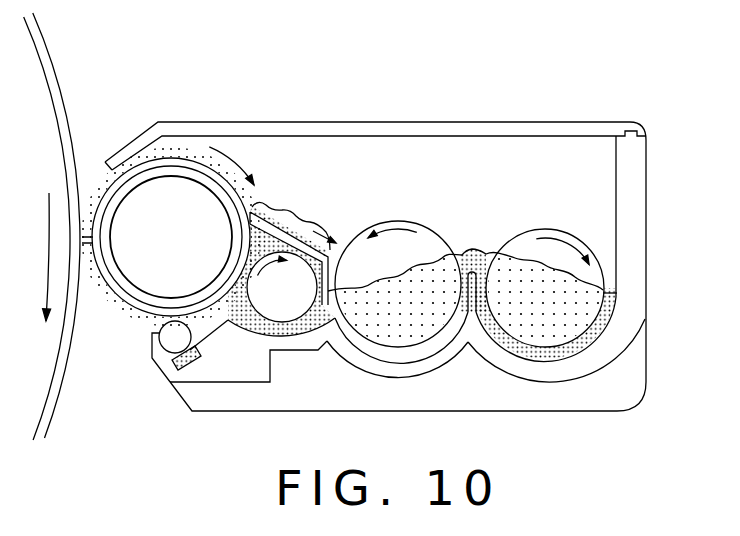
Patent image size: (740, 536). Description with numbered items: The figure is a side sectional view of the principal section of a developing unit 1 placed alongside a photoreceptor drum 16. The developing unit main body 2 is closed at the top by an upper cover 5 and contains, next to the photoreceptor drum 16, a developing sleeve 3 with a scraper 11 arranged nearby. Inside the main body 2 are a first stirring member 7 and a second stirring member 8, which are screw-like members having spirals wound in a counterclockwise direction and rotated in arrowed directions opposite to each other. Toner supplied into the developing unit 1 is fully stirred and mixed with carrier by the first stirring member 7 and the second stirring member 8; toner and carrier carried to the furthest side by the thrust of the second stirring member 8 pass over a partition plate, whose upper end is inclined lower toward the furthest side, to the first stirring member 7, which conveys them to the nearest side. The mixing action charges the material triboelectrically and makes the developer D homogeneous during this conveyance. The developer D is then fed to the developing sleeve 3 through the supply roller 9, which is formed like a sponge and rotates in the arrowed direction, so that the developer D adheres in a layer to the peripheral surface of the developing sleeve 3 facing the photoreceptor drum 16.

The developing unit 1 is at (609, 76).
The developing unit main body 2 is at (646, 235).
The developing sleeve 3 is at (140, 163).
The upper cover 5 is at (403, 122).
The first stirring member 7 is at (410, 322).
The second stirring member 8 is at (527, 357).
The supply roller 9 is at (282, 312).
The scraper 11 is at (280, 213).
The photoreceptor drum 16 is at (60, 80).
The developer D is at (582, 313).